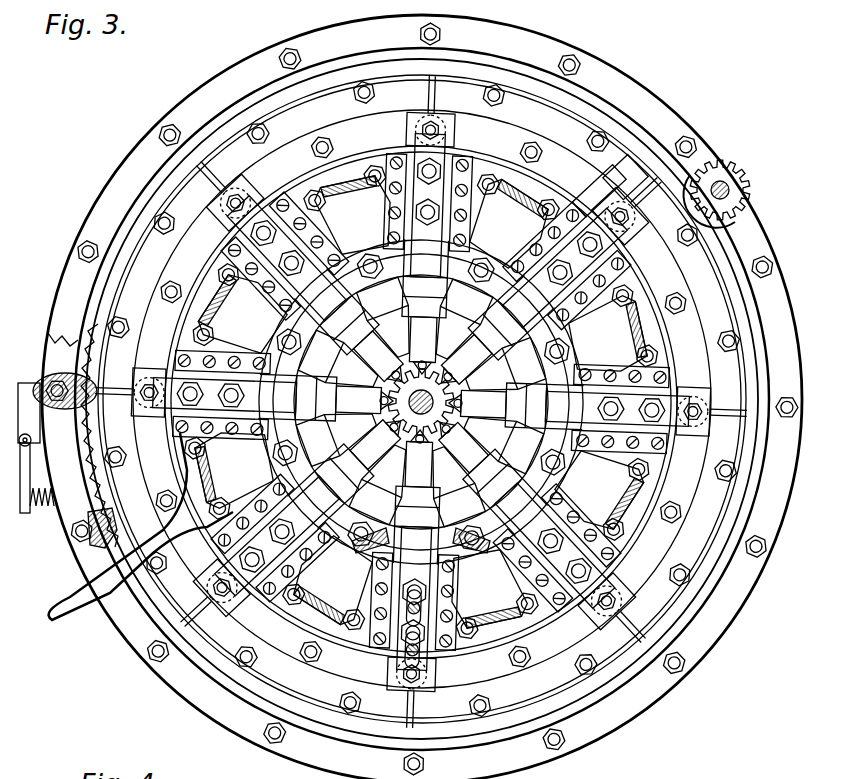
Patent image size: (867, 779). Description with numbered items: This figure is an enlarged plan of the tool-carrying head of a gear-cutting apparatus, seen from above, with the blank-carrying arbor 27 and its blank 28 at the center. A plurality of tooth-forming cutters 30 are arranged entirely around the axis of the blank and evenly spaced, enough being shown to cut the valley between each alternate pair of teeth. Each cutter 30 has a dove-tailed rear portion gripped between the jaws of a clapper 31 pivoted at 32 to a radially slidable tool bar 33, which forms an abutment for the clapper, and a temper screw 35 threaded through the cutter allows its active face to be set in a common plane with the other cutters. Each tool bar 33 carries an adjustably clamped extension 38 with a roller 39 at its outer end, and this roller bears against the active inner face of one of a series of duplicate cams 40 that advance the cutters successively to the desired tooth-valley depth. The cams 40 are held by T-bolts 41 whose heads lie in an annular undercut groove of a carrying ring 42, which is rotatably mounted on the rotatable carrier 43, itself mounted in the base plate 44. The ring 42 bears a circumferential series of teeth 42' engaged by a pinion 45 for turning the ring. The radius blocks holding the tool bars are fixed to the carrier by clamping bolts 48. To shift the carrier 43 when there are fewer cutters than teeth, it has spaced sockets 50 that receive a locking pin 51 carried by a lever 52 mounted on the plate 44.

The blank-carrying arbor 27 is at (455, 420).
The blank 28 is at (392, 418).
The tooth-forming cutter 30 is at (392, 385).
The clapper 31 is at (370, 540).
The pivot 32 is at (466, 540).
The tool bar 33 is at (483, 438).
The temper screw 35 is at (448, 335).
The extension 38 is at (636, 230).
The roller 39 is at (693, 448).
The cam 40 is at (422, 397).
The T-bolt 41 is at (358, 95).
The carrying ring 42 is at (422, 399).
The teeth 42' is at (79, 435).
The carrier 43 is at (421, 402).
The base plate 44 is at (82, 538).
The pinion 45 is at (748, 197).
The clamping bolt 48 is at (547, 205).
The socket 50 is at (80, 390).
The locking pin 51 is at (64, 395).
The lever 52 is at (37, 509).